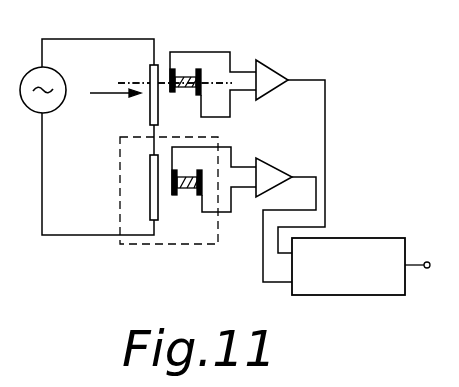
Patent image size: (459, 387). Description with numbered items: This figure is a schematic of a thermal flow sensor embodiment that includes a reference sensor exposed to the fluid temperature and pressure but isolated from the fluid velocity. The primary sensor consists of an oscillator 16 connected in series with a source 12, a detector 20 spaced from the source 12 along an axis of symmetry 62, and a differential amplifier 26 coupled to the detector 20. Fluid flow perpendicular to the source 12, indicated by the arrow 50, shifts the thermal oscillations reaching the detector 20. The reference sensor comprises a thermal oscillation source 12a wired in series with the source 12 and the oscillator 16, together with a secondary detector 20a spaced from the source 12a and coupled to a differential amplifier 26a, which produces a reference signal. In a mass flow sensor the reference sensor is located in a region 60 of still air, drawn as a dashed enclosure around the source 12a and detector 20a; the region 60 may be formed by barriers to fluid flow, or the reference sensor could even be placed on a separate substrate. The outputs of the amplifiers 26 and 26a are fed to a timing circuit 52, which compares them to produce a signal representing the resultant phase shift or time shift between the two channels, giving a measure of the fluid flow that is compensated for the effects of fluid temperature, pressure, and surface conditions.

The source 12 is at (150, 78).
The source 12a is at (150, 180).
The oscillator 16 is at (27, 107).
The detector 20 is at (184, 82).
The secondary detector 20a is at (185, 195).
The differential amplifier 26 is at (270, 64).
The differential amplifier 26a is at (272, 163).
The arrow 50 is at (92, 93).
The timing circuit 52 is at (344, 238).
The region 60 is at (164, 247).
The axis of symmetry 62 is at (213, 85).